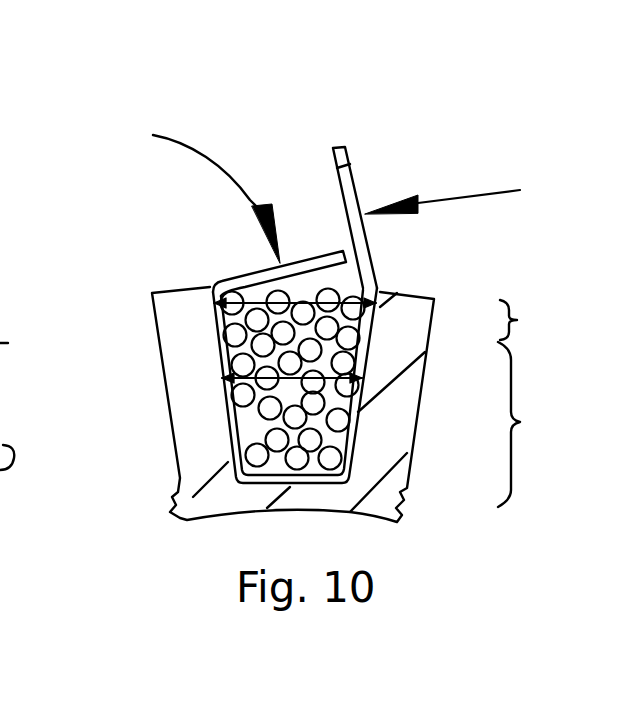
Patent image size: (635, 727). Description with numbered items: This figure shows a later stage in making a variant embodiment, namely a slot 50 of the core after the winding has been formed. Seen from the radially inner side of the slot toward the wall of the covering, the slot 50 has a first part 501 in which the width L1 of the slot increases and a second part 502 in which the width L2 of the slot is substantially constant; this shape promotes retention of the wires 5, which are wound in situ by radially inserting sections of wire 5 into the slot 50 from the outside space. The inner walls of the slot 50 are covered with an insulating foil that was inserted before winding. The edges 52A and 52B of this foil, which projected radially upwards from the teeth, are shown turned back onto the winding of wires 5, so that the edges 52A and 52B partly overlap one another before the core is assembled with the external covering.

The slot 50 is at (262, 427).
The wire 5 is at (330, 460).
The edge of insulating foil 52A is at (240, 280).
The edge of insulating foil 52B is at (350, 163).
The width of the slot in the first part L1 is at (219, 382).
The width of the slot in the second part L2 is at (211, 307).
The second part of the slot 502 is at (543, 310).
The first part of the slot 501 is at (547, 424).